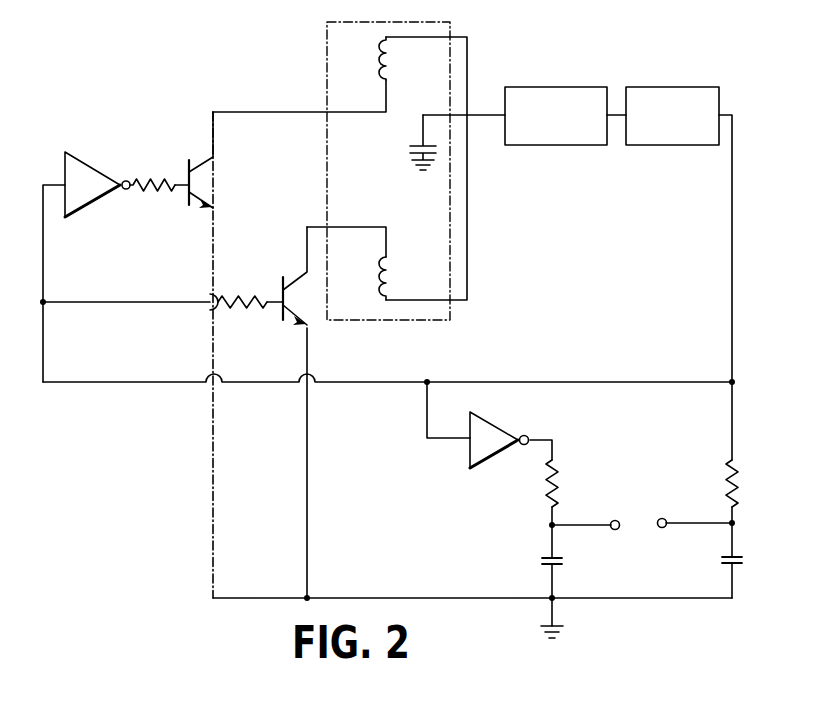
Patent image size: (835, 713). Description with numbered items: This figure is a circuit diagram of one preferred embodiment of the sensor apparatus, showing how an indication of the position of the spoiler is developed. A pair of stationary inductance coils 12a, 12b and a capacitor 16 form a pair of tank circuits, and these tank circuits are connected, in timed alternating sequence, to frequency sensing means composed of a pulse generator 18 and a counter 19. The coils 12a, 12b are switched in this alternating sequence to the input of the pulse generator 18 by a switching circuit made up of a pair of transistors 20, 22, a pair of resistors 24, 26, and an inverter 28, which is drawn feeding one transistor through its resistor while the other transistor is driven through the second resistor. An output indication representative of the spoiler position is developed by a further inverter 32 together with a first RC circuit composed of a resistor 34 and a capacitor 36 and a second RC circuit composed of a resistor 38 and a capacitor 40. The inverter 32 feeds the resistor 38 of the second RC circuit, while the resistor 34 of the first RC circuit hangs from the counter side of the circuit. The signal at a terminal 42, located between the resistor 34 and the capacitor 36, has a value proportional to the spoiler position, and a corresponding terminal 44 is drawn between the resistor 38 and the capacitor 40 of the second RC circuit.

The stationary inductance coil 12a is at (380, 46).
The stationary inductance coil 12b is at (381, 262).
The capacitor 16 is at (420, 143).
The pulse generator 18 is at (527, 87).
The counter 19 is at (645, 87).
The transistor 20 is at (281, 292).
The transistor 22 is at (186, 168).
The resistor 24 is at (232, 308).
The resistor 26 is at (141, 192).
The inverter 28 is at (84, 162).
The inverter 32 is at (492, 421).
The resistor 34 is at (727, 479).
The capacitor 36 is at (729, 565).
The resistor 38 is at (560, 479).
The capacitor 40 is at (557, 568).
The terminal 42 is at (660, 518).
The terminal 44 is at (618, 520).